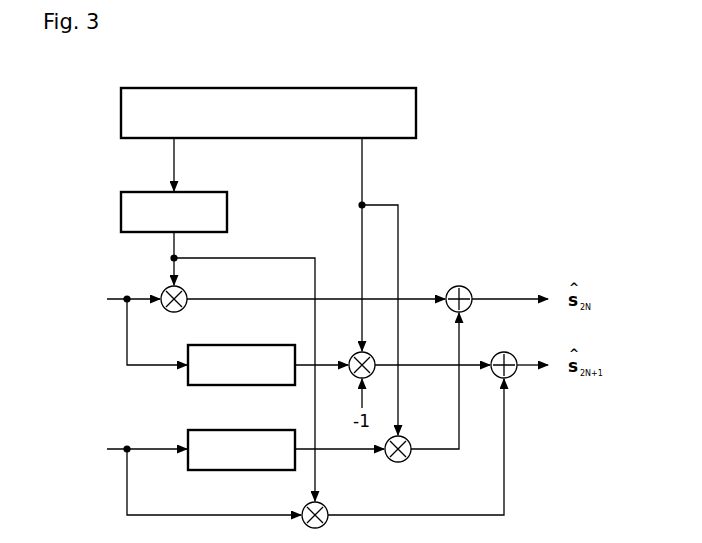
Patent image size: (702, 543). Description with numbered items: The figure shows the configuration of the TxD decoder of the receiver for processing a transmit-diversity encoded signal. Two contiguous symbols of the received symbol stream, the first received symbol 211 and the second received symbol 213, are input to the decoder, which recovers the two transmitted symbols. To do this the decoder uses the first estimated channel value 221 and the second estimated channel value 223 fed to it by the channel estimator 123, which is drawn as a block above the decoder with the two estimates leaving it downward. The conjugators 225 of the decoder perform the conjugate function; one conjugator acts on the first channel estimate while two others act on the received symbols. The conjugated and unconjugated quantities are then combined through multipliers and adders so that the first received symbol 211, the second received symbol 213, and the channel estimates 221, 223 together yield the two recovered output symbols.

The channel estimator 123 is at (376, 87).
The estimated channel value ĥ0 221 is at (200, 169).
The estimated channel value ĥ1 223 is at (391, 171).
The conjugator 225 is at (229, 210).
The received symbol y2n 211 is at (78, 285).
The received symbol y2n+1 213 is at (78, 437).